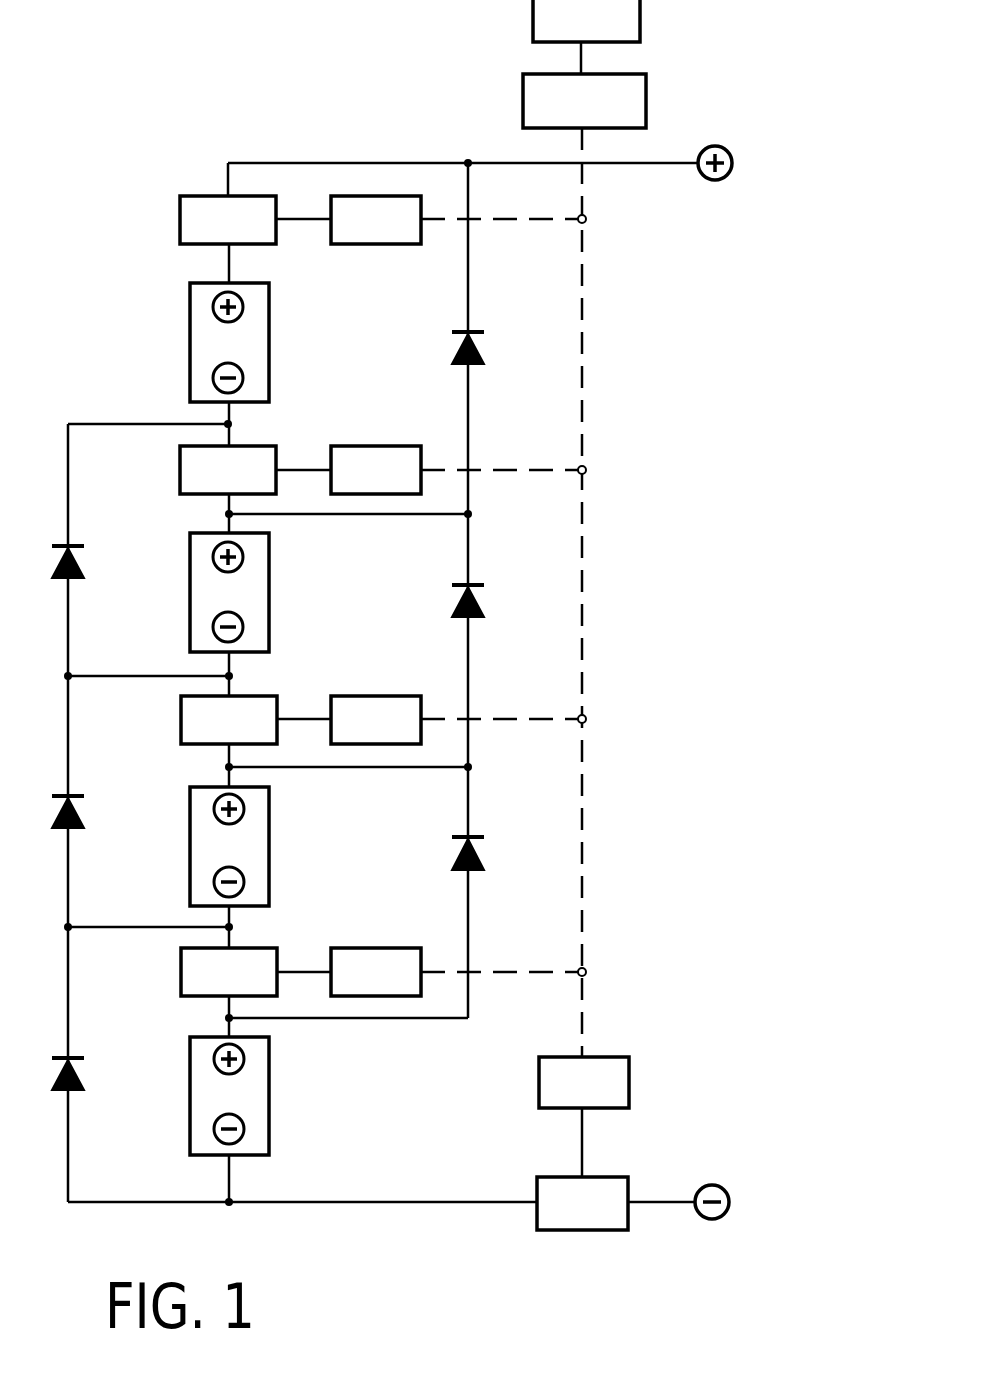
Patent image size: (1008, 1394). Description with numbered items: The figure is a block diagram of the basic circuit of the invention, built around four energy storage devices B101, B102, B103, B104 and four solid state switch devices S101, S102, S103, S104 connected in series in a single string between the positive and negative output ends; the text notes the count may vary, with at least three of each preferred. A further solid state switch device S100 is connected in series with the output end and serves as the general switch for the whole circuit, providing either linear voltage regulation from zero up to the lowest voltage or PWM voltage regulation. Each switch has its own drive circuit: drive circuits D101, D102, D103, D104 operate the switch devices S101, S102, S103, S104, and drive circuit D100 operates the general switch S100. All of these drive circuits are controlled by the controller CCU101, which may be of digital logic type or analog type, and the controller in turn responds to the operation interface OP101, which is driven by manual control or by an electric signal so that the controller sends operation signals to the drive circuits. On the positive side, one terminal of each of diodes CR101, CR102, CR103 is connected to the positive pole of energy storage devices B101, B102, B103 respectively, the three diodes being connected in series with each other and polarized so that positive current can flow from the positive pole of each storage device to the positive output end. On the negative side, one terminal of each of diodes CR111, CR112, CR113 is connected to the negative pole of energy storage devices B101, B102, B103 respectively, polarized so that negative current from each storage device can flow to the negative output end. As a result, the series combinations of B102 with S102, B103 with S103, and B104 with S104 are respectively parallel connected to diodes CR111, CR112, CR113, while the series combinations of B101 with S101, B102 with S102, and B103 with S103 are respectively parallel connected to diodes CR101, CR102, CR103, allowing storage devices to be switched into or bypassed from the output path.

The operation interface OP101 is at (586, 21).
The controller CCU101 is at (584, 101).
The solid state switch device S101 is at (228, 220).
The solid state switch device S102 is at (228, 470).
The solid state switch device S103 is at (229, 720).
The solid state switch device S104 is at (229, 972).
The solid state switch device S100 is at (582, 1203).
The drive circuit D101 is at (431, 220).
The drive circuit D102 is at (431, 470).
The drive circuit D103 is at (431, 720).
The drive circuit D104 is at (431, 972).
The drive circuit D100 is at (584, 1082).
The energy storage device B101 is at (229, 342).
The energy storage device B102 is at (229, 592).
The energy storage device B103 is at (229, 846).
The energy storage device B104 is at (229, 1096).
The diode CR101 is at (423, 351).
The diode CR102 is at (420, 605).
The diode CR103 is at (420, 858).
The diode CR111 is at (110, 564).
The diode CR112 is at (110, 814).
The diode CR113 is at (111, 1078).